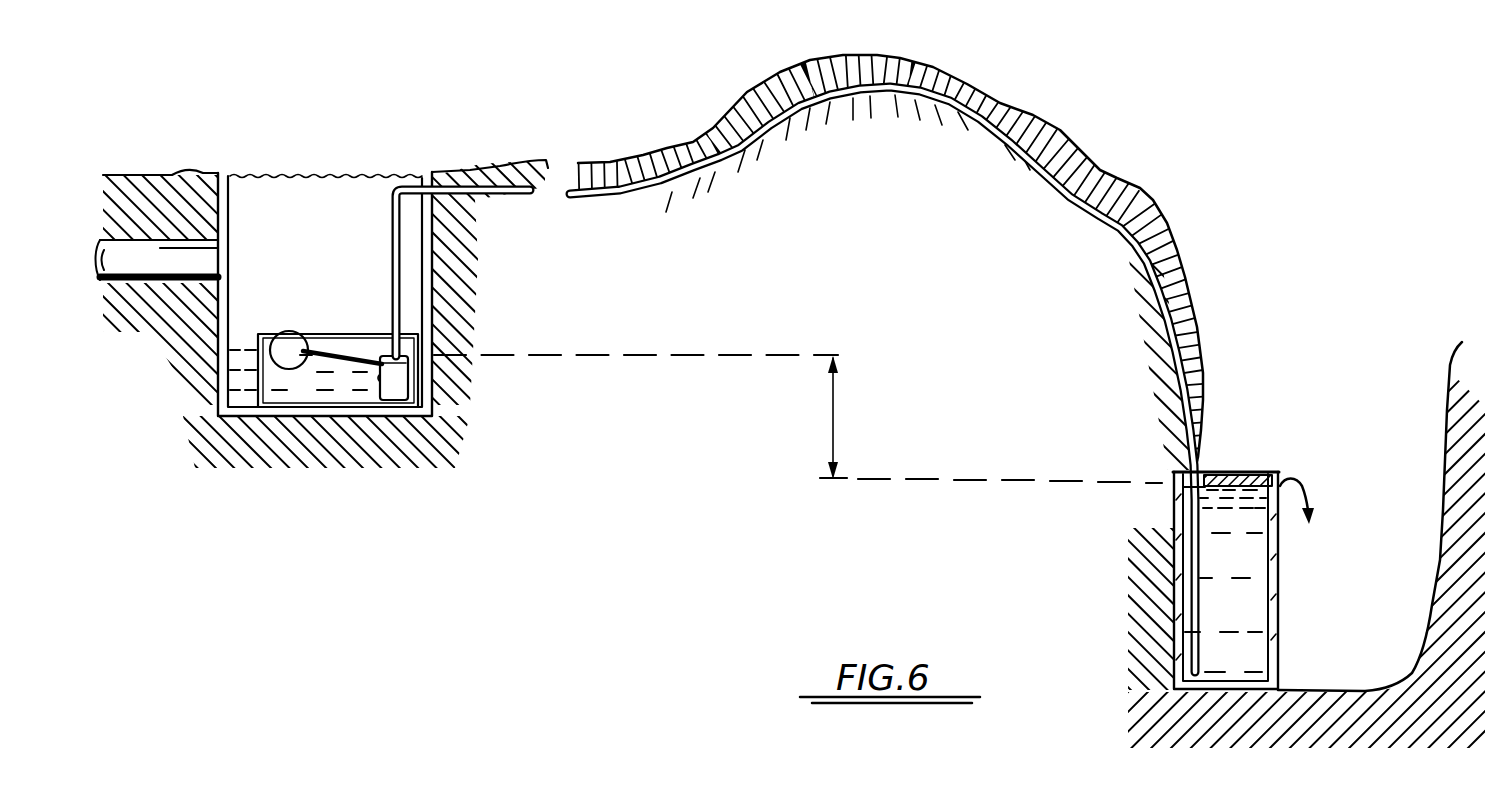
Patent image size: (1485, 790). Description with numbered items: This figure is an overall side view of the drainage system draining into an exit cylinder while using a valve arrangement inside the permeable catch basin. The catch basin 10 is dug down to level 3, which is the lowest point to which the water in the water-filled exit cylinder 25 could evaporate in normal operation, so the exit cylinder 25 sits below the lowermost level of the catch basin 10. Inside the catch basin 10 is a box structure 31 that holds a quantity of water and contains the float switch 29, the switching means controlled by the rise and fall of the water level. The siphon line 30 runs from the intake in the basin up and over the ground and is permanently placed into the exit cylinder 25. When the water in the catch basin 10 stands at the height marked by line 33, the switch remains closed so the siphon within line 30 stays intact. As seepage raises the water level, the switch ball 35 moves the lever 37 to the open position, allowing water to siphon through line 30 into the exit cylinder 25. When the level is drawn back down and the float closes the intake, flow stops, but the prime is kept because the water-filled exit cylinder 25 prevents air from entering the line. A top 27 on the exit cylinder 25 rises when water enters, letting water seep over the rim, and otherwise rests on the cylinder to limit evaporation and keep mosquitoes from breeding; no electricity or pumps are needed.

The level 3 is at (214, 406).
The catch basin 10 is at (448, 388).
The exit cylinder 25 is at (1172, 476).
The top 27 is at (1248, 471).
The float switch 29 is at (345, 355).
The line 30 is at (862, 101).
The box structure 31 is at (228, 418).
The line 33 is at (594, 356).
The switch ball 35 is at (284, 331).
The lever 37 is at (347, 334).